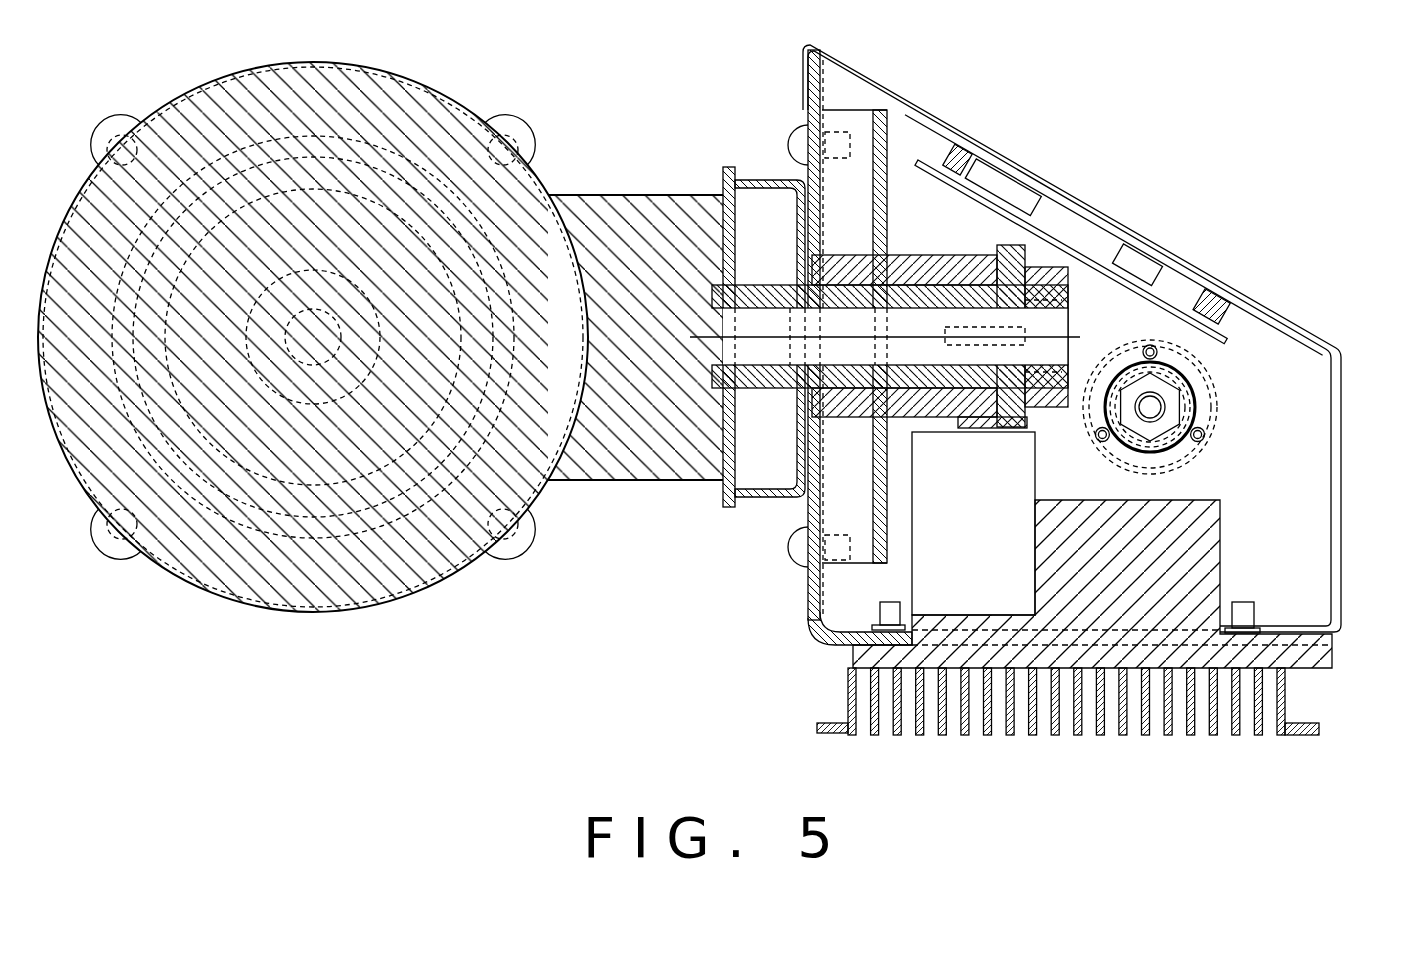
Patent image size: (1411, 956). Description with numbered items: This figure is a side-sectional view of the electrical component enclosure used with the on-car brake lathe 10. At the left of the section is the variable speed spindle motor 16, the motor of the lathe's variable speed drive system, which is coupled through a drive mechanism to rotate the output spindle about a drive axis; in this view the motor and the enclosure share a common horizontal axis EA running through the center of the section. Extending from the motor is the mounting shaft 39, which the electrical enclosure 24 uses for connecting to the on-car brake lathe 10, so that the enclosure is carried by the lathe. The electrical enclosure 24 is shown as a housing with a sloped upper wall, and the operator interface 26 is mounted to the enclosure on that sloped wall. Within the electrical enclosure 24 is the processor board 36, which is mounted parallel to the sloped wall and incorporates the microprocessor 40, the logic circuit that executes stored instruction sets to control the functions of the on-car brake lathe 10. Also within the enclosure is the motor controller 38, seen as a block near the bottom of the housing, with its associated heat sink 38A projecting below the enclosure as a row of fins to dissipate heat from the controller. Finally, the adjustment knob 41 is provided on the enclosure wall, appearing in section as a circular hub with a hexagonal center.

The on-car brake lathe 10 is at (380, 363).
The variable speed spindle motor 16 is at (420, 83).
The electrical enclosure 24 is at (1064, 322).
The operator interface 26 is at (990, 140).
The processor board 36 is at (1072, 237).
The motor controller 38 is at (1114, 555).
The heat sink 38A is at (1283, 706).
The mounting shaft 39 is at (762, 388).
The microprocessor 40 is at (1007, 195).
The adjustment knob 41 is at (1222, 387).
The motor axis EA is at (697, 345).